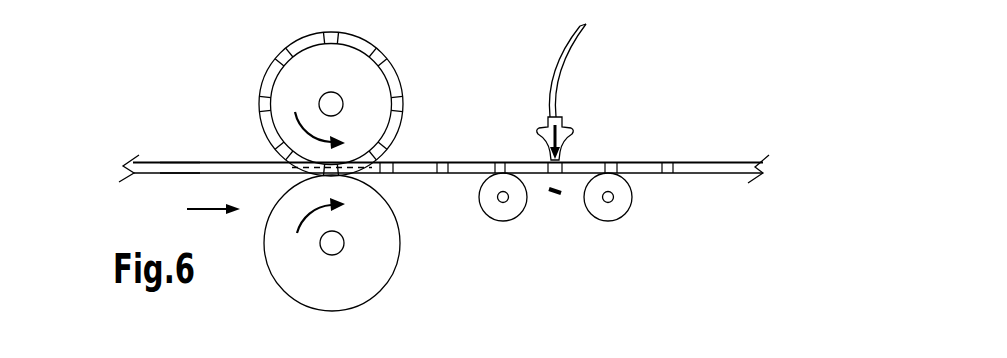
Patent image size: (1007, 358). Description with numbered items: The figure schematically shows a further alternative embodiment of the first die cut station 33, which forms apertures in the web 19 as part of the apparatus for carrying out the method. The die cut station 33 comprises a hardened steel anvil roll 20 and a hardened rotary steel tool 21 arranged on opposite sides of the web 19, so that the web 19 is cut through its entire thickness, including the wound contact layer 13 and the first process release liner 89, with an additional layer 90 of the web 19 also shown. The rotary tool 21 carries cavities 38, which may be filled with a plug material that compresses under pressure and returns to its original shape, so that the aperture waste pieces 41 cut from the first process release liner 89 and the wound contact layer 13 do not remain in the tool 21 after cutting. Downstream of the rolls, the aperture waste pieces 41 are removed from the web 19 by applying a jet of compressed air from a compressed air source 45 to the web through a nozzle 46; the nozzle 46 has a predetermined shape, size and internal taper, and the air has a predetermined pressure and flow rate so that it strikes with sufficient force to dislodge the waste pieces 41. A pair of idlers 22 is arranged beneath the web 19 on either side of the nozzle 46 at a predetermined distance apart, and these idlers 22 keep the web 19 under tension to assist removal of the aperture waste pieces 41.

The first die cut station 33 is at (208, 43).
The hardened rotary steel tool 21 is at (355, 43).
The cavities 38 is at (385, 52).
The wound contact layer 13 is at (163, 171).
The top layer 90 is at (192, 162).
The web 19 is at (98, 143).
The first process release liner 89 is at (177, 175).
The hardened steel anvil roll 20 is at (282, 293).
The idlers 22 is at (503, 212).
The aperture waste pieces 41 is at (557, 197).
The compressed air source 45 is at (563, 108).
The nozzle 46 is at (563, 145).